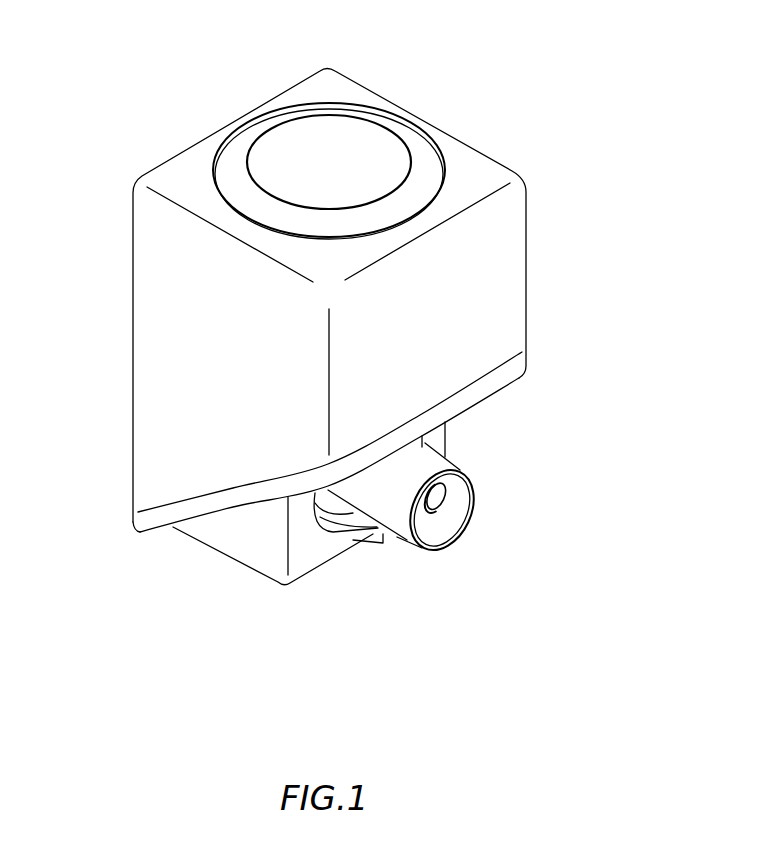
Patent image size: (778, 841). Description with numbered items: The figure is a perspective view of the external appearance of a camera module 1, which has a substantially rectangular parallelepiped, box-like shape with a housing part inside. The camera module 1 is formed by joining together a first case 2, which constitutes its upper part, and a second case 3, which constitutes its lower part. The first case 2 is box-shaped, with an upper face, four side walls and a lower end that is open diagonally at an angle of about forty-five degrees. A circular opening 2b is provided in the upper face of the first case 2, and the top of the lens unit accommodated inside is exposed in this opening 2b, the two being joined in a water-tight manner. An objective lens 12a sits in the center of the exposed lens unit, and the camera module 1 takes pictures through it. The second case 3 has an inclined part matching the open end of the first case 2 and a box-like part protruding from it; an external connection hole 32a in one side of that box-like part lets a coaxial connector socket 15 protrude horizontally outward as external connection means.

The camera module 1 is at (120, 73).
The first case 2 is at (482, 287).
The opening 2b is at (445, 167).
The objective lens 12a is at (327, 150).
The second case 3 is at (233, 535).
The external connection hole 32a is at (352, 527).
The coaxial connector socket 15 is at (443, 520).